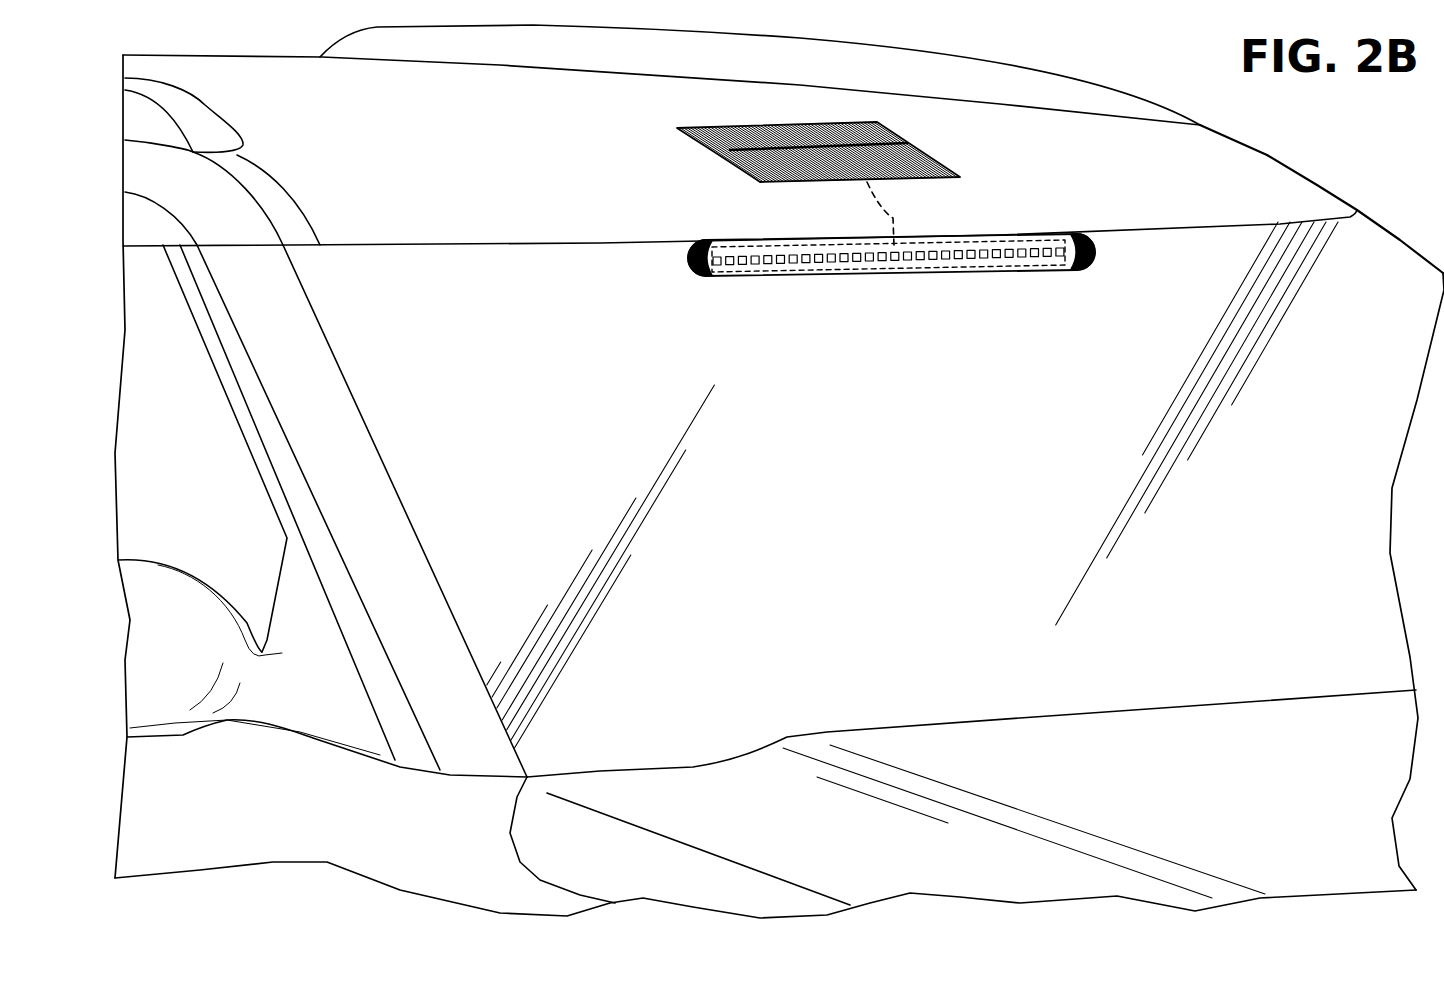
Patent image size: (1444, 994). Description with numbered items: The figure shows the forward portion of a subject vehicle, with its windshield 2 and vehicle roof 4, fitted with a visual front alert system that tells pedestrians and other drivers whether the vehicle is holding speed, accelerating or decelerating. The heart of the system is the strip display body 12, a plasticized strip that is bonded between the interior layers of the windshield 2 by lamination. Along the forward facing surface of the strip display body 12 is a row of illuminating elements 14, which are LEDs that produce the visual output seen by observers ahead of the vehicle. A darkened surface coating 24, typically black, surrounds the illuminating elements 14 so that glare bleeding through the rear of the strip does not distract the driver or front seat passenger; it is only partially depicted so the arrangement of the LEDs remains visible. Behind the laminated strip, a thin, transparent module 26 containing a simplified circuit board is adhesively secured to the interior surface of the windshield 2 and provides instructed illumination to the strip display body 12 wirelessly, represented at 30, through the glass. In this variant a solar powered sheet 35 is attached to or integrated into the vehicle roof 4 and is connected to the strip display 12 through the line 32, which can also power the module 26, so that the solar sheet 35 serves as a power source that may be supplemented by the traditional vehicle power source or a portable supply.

The vehicle windshield 2 is at (779, 471).
The vehicle roof 4 is at (495, 156).
The strip display body 12 is at (843, 277).
The illuminating elements 14 is at (938, 257).
The darkened surface coating 24 is at (697, 267).
The module 26 is at (785, 271).
The wireless communication 30 is at (875, 293).
The line 32 is at (893, 218).
The solar powered sheet 35 is at (733, 157).